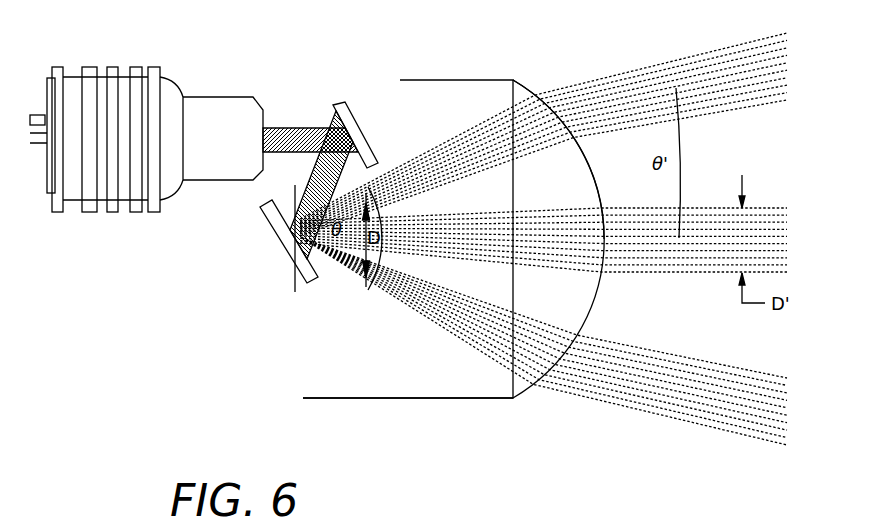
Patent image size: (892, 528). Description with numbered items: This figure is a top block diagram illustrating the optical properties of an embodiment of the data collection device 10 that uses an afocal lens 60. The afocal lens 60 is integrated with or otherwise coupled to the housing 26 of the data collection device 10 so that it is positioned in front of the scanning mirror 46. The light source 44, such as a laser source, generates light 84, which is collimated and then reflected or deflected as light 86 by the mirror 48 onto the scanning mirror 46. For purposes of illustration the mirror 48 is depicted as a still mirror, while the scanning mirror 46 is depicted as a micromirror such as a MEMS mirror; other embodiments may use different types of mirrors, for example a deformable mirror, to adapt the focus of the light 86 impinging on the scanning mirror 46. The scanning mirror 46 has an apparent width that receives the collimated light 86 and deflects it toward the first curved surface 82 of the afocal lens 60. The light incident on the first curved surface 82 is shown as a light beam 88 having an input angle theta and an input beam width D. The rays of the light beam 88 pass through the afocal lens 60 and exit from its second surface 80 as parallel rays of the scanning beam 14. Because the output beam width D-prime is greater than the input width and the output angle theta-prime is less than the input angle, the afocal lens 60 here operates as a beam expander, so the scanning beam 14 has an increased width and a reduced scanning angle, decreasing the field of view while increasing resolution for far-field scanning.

The data collection device 10 is at (104, 289).
The scanning beam 14 is at (588, 80).
The housing 26 is at (415, 400).
The light source 44 is at (214, 97).
The scanning mirror 46 is at (272, 215).
The mirror 48 is at (352, 118).
The afocal lens 60 is at (590, 290).
The second surface 80 is at (588, 158).
The first curved surface 82 is at (385, 222).
The light 84 is at (303, 127).
The light 86 is at (321, 182).
The light beam 88 is at (347, 197).